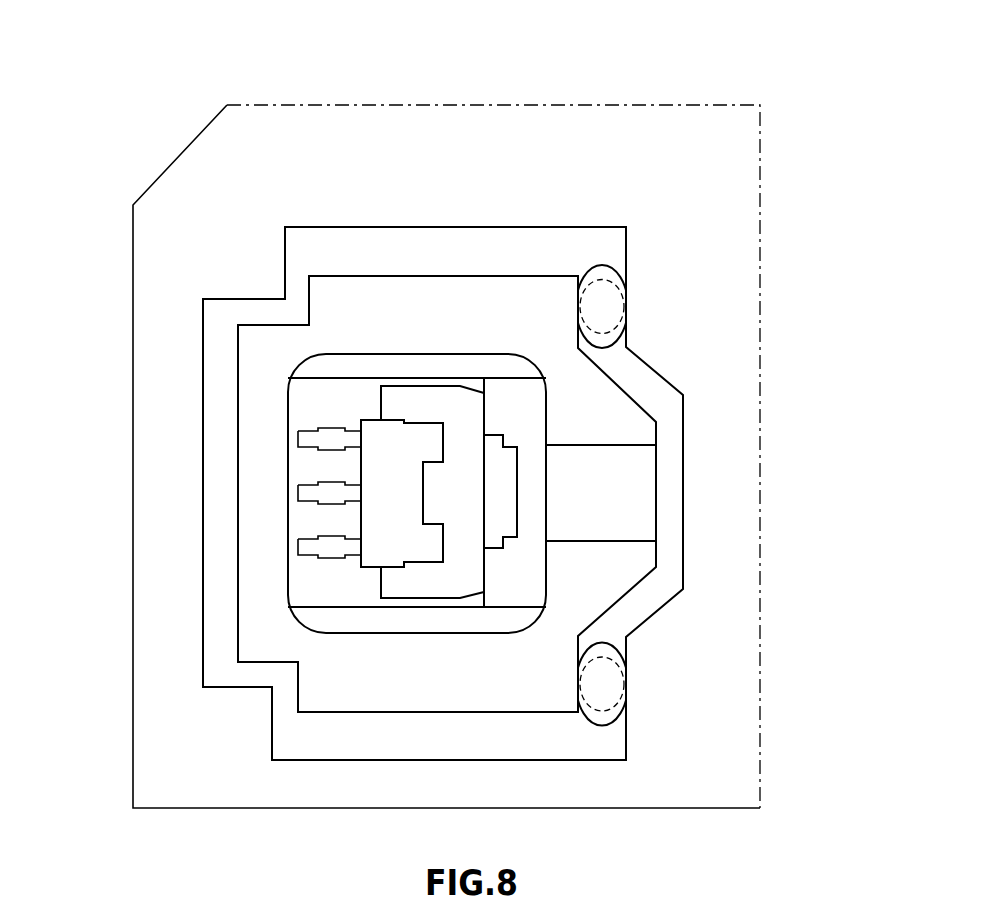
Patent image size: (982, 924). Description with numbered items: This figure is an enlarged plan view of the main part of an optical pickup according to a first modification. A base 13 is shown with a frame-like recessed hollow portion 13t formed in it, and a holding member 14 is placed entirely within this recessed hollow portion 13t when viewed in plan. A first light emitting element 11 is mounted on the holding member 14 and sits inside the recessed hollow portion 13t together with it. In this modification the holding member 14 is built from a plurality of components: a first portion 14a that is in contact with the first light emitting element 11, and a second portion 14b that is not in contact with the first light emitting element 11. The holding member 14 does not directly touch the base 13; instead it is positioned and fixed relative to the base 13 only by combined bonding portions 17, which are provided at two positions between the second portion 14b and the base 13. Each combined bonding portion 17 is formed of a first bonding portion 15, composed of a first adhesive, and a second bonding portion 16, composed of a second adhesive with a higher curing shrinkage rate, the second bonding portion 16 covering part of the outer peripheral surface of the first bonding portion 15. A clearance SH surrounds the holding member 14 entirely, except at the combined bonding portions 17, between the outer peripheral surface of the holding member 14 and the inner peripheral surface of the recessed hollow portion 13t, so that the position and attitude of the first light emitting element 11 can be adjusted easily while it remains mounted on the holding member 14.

The first light emitting element 11 is at (378, 464).
The base 13 is at (133, 280).
The recessed hollow portion 13t is at (353, 227).
The holding member 14 is at (447, 359).
The first portion 14a is at (430, 362).
The second portion 14b is at (513, 297).
The first bonding portion 15 is at (603, 303).
The second bonding portion 16 is at (602, 273).
The combined bonding portion 17 is at (726, 507).
The clearance SH is at (223, 555).